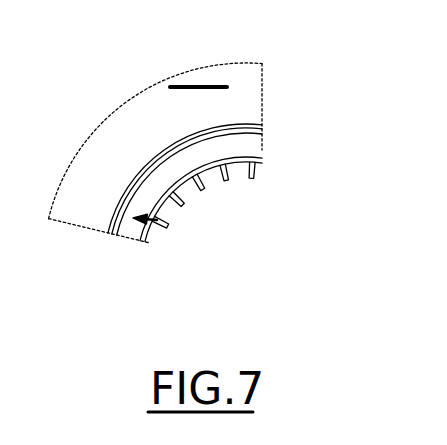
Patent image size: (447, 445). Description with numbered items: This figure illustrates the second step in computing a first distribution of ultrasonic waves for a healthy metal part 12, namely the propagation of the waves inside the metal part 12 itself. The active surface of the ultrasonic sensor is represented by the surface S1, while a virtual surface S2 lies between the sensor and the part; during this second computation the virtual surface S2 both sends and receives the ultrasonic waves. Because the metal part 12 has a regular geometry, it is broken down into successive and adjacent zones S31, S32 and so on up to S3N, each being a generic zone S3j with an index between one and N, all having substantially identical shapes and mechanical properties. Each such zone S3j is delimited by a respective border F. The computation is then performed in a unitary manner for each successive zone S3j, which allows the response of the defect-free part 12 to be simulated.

The metal part 12 is at (246, 147).
The active surface of the ultrasonic sensor S1 is at (208, 86).
The virtual surface S2 is at (142, 172).
The N-th successive zone S3N is at (242, 172).
The successive zone of index j S3j is at (235, 190).
The second successive zone S32 is at (168, 210).
The first successive zone S31 is at (158, 237).
The border F is at (118, 231).